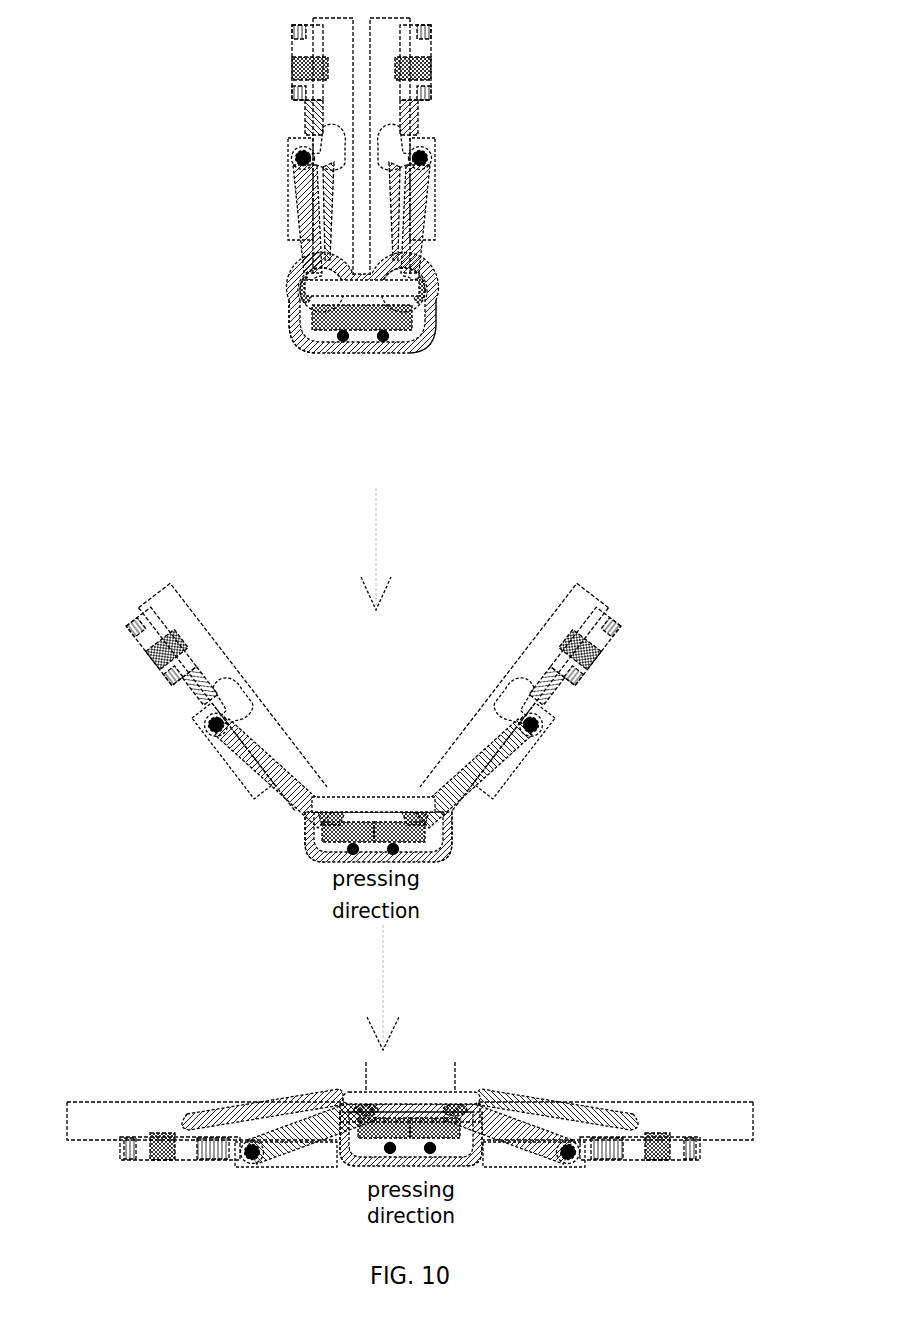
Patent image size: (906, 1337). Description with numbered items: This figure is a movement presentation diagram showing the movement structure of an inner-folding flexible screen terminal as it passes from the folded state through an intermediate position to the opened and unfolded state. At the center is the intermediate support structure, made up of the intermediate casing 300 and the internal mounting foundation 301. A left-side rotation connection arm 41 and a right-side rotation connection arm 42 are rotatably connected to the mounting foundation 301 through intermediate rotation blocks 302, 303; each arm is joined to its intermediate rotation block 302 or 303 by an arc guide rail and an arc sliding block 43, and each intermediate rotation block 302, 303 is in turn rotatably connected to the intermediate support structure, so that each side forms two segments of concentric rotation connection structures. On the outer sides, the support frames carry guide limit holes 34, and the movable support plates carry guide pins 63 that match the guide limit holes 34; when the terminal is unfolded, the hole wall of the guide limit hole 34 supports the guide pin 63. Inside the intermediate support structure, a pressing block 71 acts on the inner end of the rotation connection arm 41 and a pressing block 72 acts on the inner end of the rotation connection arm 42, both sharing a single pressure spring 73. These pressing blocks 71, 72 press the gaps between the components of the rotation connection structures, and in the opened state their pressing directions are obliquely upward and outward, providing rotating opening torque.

The guide limit hole 34 is at (337, 150).
The guide pin 63 is at (297, 175).
The rotation connection arm 41 is at (297, 260).
The rotation connection arm 42 is at (422, 262).
The arc sliding block 43 is at (291, 293).
The intermediate casing 300 is at (347, 350).
The mounting foundation 301 is at (360, 338).
The intermediate rotation block 302 is at (295, 330).
The intermediate rotation block 303 is at (422, 343).
The pressure spring 73 is at (368, 823).
The pressing block 71 is at (333, 837).
The pressing block 72 is at (410, 830).